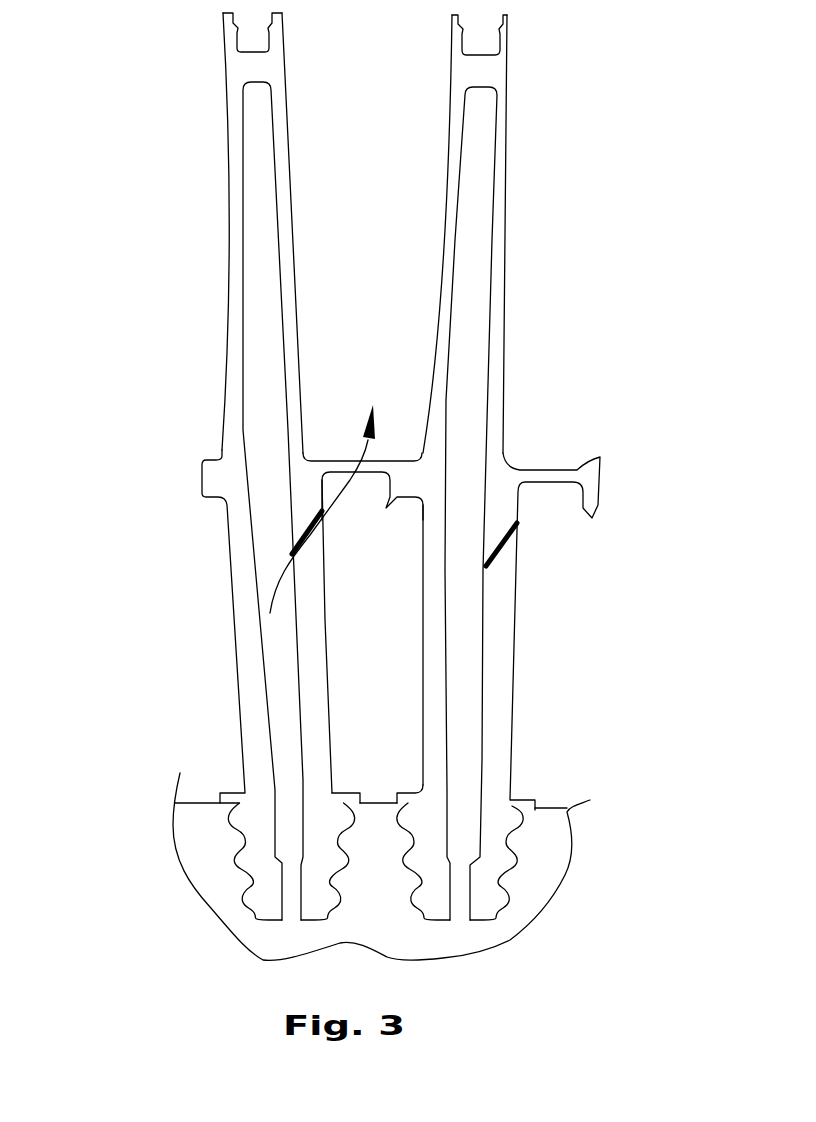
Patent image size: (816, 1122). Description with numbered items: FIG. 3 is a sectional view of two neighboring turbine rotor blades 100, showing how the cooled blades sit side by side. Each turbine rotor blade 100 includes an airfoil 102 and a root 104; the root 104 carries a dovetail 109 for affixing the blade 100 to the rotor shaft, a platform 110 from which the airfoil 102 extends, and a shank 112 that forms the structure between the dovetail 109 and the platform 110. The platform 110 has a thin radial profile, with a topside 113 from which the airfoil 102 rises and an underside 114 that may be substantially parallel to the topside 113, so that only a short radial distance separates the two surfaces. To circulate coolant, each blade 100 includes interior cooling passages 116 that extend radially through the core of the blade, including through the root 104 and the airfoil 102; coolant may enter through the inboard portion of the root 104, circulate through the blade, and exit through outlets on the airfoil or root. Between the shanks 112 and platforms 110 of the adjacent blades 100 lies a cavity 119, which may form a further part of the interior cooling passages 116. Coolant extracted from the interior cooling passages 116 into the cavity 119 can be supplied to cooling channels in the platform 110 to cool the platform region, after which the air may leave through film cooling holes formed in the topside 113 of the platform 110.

The turbine rotor blade 100 is at (333, 207).
The airfoil 102 is at (228, 287).
The root 104 is at (622, 722).
The dovetail 109 is at (497, 877).
The platform 110 is at (348, 462).
The shank 112 is at (182, 681).
The topside 113 is at (383, 460).
The underside 114 is at (370, 476).
The interior cooling passages 116 is at (263, 523).
The cavity 119 is at (397, 635).